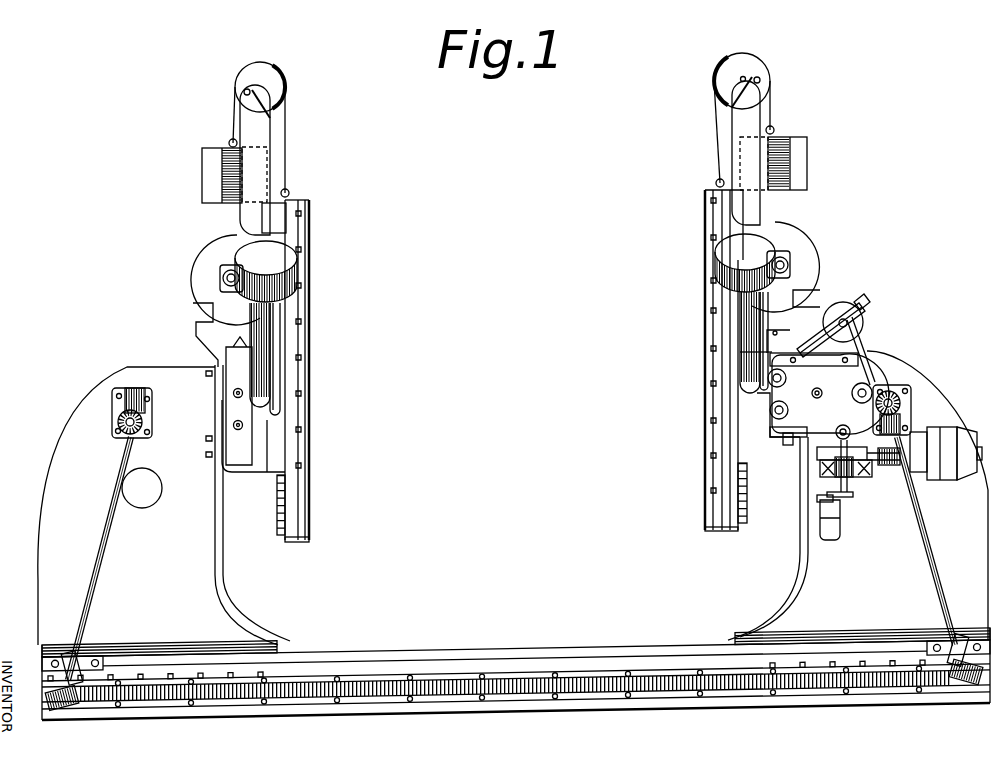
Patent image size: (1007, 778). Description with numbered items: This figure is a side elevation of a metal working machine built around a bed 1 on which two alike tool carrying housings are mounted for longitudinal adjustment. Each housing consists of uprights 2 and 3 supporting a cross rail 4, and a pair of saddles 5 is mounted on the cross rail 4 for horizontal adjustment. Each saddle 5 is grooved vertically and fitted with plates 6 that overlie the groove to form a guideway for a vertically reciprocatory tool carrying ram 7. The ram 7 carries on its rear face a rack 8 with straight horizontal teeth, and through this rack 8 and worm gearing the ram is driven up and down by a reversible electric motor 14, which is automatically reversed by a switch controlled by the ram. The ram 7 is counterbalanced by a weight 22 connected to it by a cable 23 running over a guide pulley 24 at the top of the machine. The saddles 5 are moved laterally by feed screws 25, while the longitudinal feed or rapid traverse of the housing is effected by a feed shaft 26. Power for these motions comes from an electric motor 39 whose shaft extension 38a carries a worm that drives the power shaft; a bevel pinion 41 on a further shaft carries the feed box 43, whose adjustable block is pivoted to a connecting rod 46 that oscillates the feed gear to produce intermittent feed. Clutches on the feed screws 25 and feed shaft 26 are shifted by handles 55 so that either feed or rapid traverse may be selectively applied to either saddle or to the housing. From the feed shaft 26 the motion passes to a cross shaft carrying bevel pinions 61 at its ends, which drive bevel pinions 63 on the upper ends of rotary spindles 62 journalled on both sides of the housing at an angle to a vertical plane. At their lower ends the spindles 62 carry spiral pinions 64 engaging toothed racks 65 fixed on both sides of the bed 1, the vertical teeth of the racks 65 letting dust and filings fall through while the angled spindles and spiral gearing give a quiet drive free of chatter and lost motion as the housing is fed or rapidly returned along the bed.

The bed 1 is at (610, 655).
The upright 2 is at (815, 553).
The upright 3 is at (231, 607).
The cross rail 4 is at (228, 428).
The saddle 5 is at (284, 431).
The plates 6 is at (296, 372).
The tool carrying ram 7 is at (299, 504).
The rack 8 is at (278, 522).
The reversible electric motor 14 is at (208, 253).
The weight 22 is at (211, 150).
The cable 23 is at (286, 128).
The guide pulley 24 is at (283, 75).
The feed screws 25 is at (233, 394).
The feed shaft 26 is at (860, 392).
The extension of the motor shaft 38a is at (878, 468).
The electric motor 39 is at (938, 430).
The bevel pinion 41 is at (862, 328).
The feed box 43 is at (852, 307).
The connecting rod 46 is at (870, 347).
The handle 55 is at (760, 400).
The bevel pinion 61 is at (120, 421).
The rotary spindle 62 is at (108, 548).
The bevel pinion 63 is at (148, 406).
The spiral pinion 64 is at (75, 716).
The toothed rack 65 is at (880, 681).